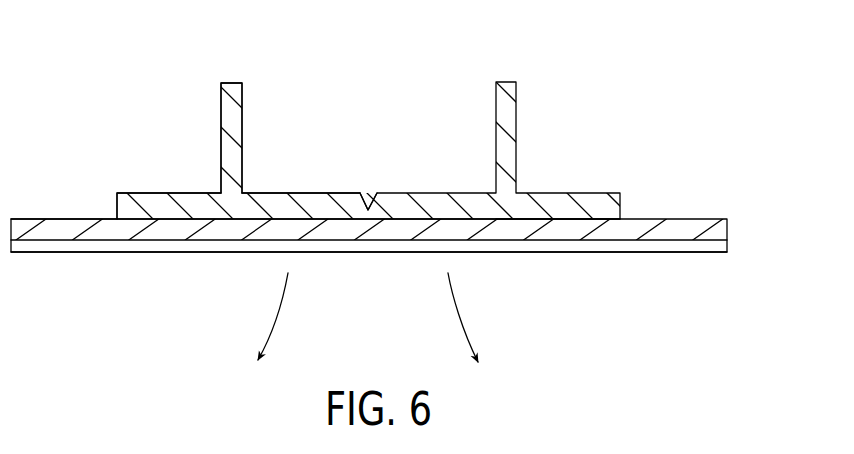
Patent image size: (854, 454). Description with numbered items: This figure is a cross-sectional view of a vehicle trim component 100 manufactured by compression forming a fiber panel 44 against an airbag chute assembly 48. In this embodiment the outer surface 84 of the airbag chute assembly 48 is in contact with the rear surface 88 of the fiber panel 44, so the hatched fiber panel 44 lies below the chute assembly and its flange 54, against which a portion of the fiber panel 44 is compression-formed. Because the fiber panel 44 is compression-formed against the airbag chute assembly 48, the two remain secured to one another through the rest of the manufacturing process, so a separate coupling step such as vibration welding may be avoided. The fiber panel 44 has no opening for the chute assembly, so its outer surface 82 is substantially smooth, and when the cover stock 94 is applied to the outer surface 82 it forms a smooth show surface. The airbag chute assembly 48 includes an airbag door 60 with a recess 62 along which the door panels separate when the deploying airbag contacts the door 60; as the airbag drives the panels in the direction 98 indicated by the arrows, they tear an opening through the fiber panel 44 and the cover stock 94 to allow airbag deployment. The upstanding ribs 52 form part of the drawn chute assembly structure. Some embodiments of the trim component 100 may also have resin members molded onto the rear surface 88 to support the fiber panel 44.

The fiber panel 44 is at (640, 218).
The airbag chute assembly 48 is at (408, 138).
The upstanding rib 52 is at (232, 81).
The flange 54 is at (147, 193).
The airbag door 60 is at (312, 205).
The recess 62 is at (360, 193).
The outer surface of the fiber panel 82 is at (45, 240).
The outer surface of the airbag chute assembly 84 is at (573, 220).
The rear surface of the fiber panel 88 is at (63, 218).
The cover stock 94 is at (108, 242).
The direction 98 is at (280, 315).
The vehicle trim component 100 is at (712, 157).